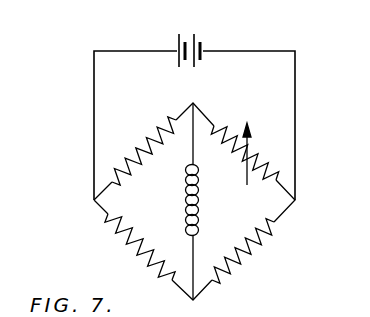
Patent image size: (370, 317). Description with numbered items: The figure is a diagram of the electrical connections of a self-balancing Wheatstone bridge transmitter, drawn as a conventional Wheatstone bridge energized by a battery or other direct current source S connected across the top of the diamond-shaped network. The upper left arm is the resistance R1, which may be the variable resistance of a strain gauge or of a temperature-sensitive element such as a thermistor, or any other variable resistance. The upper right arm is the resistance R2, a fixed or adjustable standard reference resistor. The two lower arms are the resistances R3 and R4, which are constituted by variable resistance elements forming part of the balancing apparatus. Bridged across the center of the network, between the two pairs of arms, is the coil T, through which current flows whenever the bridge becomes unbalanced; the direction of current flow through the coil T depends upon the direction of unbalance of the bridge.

The direct current source S is at (197, 36).
The variable resistance R1 is at (125, 157).
The standard reference resistor R2 is at (255, 150).
The variable resistance element R3 is at (122, 242).
The variable resistance element R4 is at (250, 257).
The coil T is at (198, 206).